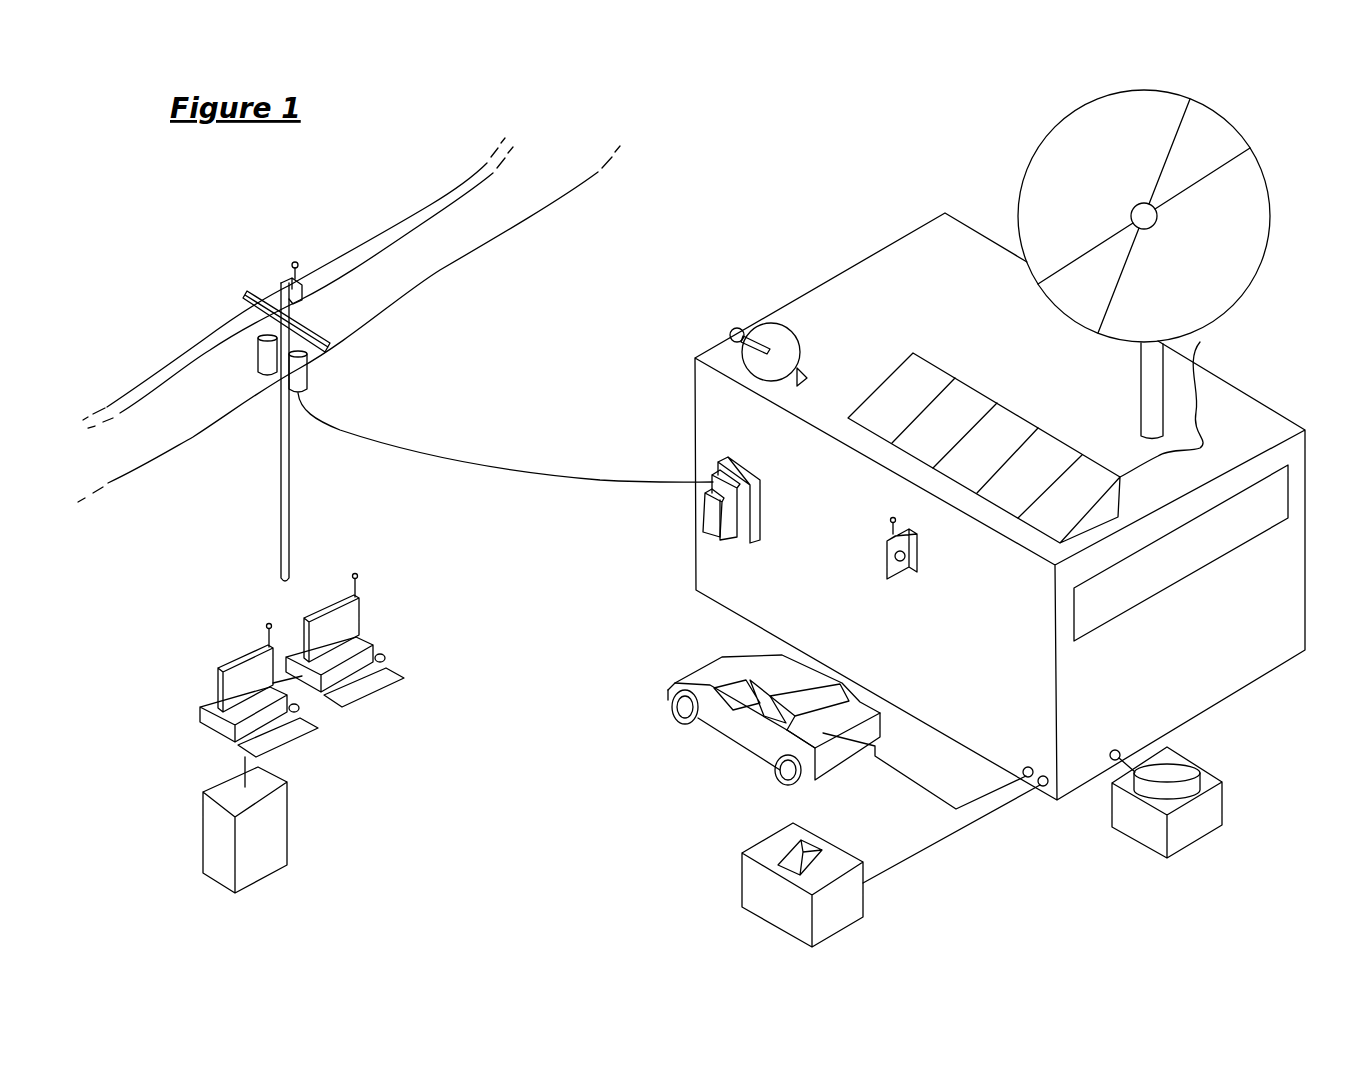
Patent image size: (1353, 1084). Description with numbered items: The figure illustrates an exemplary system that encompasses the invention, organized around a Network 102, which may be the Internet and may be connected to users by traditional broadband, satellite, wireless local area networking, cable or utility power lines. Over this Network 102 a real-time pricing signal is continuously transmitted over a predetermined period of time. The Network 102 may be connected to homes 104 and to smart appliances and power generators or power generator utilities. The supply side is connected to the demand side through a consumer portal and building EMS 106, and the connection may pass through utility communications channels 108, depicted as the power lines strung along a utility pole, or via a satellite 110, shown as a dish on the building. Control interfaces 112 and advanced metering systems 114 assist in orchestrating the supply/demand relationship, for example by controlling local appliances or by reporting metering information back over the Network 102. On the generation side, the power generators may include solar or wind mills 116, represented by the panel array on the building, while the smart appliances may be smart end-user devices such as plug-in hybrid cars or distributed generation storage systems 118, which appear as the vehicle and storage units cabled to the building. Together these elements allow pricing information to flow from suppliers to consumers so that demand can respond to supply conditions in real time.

The Network 102 is at (146, 184).
The homes 104 is at (1313, 149).
The consumer portal and building EMS 106 is at (1009, 914).
The utility communications channels 108 is at (463, 257).
The satellite 110 is at (773, 337).
The control interfaces 112 is at (383, 620).
The advanced metering systems 114 is at (725, 543).
The solar or wind mills 116 is at (1200, 448).
The distributed generation storage systems 118 is at (763, 835).